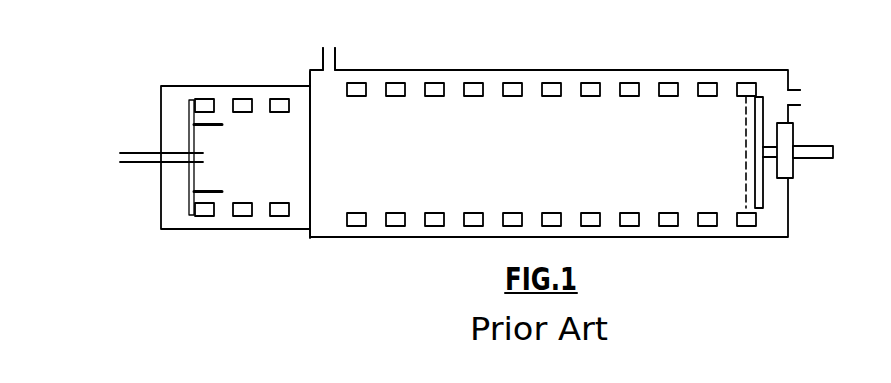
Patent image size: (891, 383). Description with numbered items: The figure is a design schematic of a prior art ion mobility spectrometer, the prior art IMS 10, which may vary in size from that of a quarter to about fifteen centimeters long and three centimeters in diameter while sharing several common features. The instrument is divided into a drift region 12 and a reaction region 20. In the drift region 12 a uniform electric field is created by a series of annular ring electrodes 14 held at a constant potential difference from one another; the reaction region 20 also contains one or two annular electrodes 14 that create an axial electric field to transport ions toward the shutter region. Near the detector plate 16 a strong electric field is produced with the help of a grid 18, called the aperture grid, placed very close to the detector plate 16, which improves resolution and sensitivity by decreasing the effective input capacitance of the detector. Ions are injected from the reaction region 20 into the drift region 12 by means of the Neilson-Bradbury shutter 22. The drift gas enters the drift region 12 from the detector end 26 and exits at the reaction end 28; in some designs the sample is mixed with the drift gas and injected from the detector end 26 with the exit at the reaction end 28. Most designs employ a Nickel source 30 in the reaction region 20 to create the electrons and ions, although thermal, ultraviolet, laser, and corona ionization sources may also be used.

The prior art IMS 10 is at (151, 111).
The drift region 12 is at (572, 156).
The annular ring electrodes 14 is at (244, 99).
The detector plate 16 is at (759, 207).
The grid 18 is at (754, 83).
The reaction region 20 is at (252, 173).
The Neilson-Bradbury shutter 22 is at (310, 175).
The detector end 26 is at (800, 98).
The reaction end 28 is at (338, 57).
The Nickel source 30 is at (216, 193).